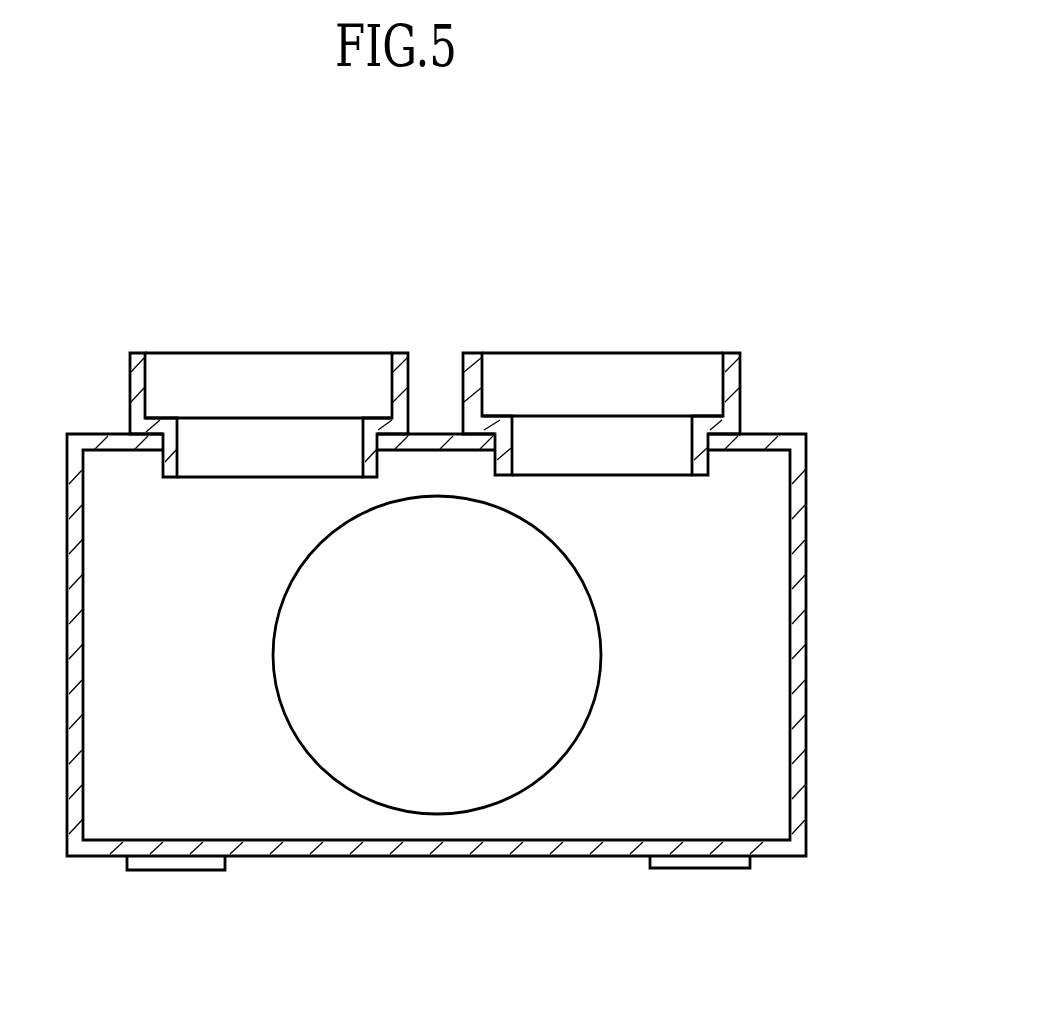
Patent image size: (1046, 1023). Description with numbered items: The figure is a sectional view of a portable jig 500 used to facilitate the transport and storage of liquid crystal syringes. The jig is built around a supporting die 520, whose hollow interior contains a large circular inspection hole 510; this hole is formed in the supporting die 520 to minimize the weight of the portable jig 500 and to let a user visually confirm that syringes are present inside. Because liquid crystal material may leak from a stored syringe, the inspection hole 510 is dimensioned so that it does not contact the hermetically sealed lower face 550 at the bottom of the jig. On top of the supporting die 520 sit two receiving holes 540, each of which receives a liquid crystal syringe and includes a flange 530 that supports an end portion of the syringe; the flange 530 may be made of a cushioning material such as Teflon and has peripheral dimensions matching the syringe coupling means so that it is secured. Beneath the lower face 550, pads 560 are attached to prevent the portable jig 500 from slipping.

The portable jig 500 is at (766, 312).
The inspection hole 510 is at (308, 676).
The supporting die 520 is at (806, 626).
The flange 530 is at (396, 365).
The receiving hole 540 is at (276, 367).
The lower face 550 is at (362, 857).
The pad 560 is at (700, 861).